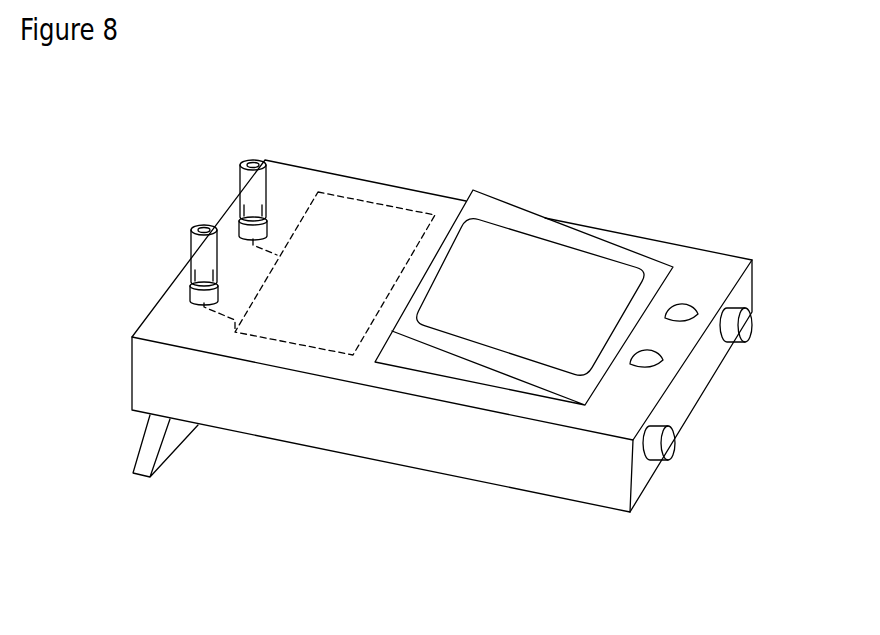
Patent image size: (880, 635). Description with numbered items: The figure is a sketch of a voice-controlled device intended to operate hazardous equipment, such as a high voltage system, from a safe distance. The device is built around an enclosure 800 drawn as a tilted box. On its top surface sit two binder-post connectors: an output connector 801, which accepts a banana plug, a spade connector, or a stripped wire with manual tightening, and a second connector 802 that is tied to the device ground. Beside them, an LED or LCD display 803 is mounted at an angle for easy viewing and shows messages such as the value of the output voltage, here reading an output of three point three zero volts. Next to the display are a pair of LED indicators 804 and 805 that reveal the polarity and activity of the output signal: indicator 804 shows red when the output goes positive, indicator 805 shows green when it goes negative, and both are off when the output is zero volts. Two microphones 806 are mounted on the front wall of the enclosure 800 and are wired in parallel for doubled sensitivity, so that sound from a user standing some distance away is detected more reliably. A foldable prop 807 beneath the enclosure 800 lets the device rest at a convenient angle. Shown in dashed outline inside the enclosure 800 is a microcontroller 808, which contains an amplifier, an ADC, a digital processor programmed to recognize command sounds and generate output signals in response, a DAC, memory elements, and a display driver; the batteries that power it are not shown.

The enclosure 800 is at (152, 312).
The output connector 801 is at (190, 233).
The second connector 802 is at (238, 173).
The LED or LCD display 803 is at (508, 213).
The LED indicator 804 is at (687, 297).
The LED indicator 805 is at (632, 366).
The microphones 806 is at (742, 345).
The foldable prop 807 is at (167, 462).
The microcontroller 808 is at (350, 198).